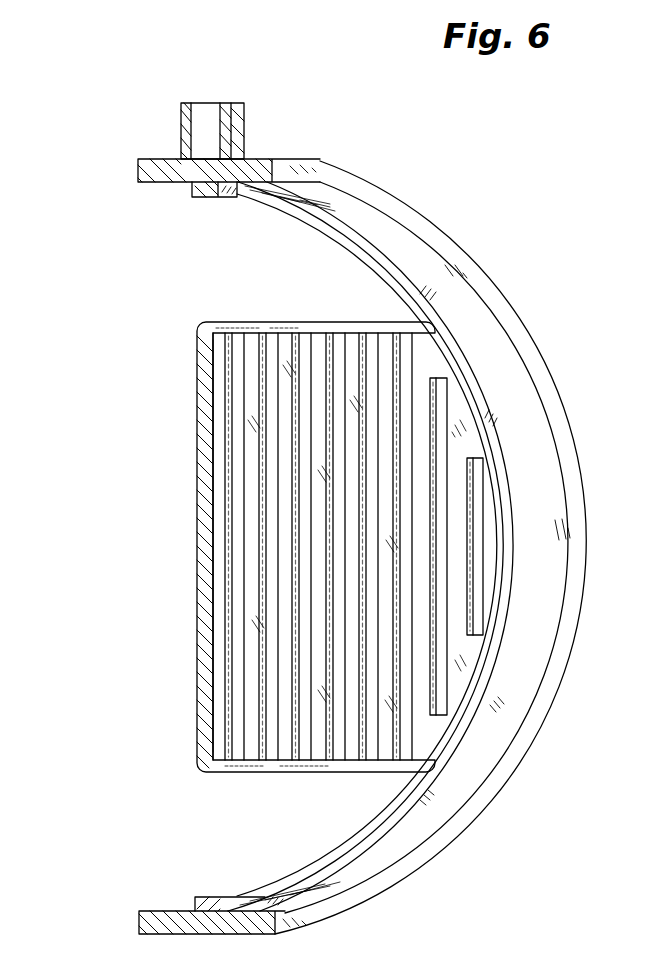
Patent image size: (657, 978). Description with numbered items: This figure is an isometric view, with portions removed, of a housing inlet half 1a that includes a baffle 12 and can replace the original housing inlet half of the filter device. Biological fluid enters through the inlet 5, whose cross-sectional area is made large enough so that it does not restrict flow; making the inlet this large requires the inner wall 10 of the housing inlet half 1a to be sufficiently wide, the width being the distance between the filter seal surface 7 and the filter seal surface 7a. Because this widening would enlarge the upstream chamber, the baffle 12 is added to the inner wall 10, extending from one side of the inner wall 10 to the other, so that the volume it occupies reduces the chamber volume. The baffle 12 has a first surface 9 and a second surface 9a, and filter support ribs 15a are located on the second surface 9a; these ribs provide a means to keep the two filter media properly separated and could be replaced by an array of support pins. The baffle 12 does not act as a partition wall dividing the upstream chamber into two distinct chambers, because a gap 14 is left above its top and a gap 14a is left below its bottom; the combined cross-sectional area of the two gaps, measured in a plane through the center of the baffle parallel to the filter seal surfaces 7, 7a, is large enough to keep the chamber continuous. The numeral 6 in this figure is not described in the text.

The housing inlet half 1a is at (128, 749).
The inlet 5 is at (210, 197).
The neck fitting 6 is at (207, 113).
The filter seal surface 7 is at (148, 913).
The filter seal surface 7a is at (504, 323).
The first surface 9 is at (195, 397).
The second surface 9a is at (215, 660).
The inner wall 10 is at (198, 898).
The baffle 12 is at (196, 440).
The gap 14 is at (272, 270).
The gap 14a is at (315, 827).
The filter support ribs 15a is at (237, 356).